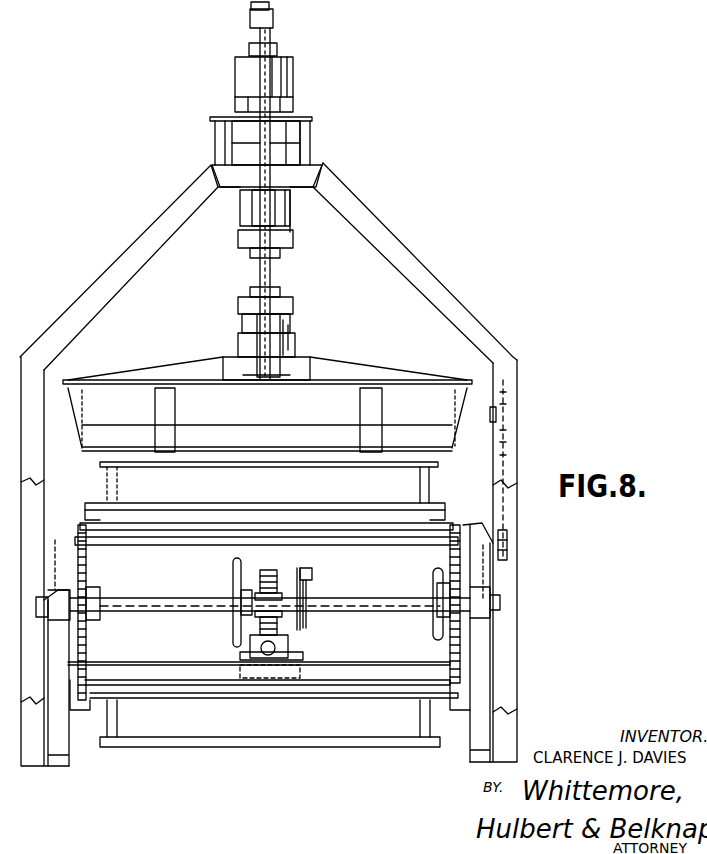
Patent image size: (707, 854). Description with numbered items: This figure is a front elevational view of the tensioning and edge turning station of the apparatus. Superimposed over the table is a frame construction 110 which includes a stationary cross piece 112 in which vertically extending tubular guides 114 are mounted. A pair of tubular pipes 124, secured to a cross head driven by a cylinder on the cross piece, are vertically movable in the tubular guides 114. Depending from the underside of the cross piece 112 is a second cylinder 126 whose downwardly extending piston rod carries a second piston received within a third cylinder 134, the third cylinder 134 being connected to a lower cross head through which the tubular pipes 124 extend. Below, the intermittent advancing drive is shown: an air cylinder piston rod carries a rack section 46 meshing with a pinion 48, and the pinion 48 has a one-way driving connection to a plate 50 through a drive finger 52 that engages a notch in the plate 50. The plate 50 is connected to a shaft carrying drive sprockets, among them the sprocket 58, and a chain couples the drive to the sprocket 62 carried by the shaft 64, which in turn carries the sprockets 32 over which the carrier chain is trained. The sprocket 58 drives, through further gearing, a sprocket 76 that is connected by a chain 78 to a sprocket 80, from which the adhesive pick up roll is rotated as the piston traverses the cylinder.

The frame construction 110 is at (105, 285).
The stationary cross piece 112 is at (225, 168).
The tubular guides 114 is at (262, 208).
The tubular pipes 124 is at (270, 83).
The second cylinder 126 is at (287, 229).
The third cylinder 134 is at (290, 307).
The sprockets 32 is at (88, 573).
The rack section 46 is at (288, 642).
The pinion 48 is at (270, 582).
The plate 50 is at (306, 591).
The drive finger 52 is at (302, 570).
The drive sprocket 58 is at (432, 578).
The sprocket 62 is at (233, 579).
The shaft 64 is at (383, 606).
The sprocket 76 is at (507, 552).
The chain 78 is at (518, 453).
The sprocket 80 is at (505, 405).